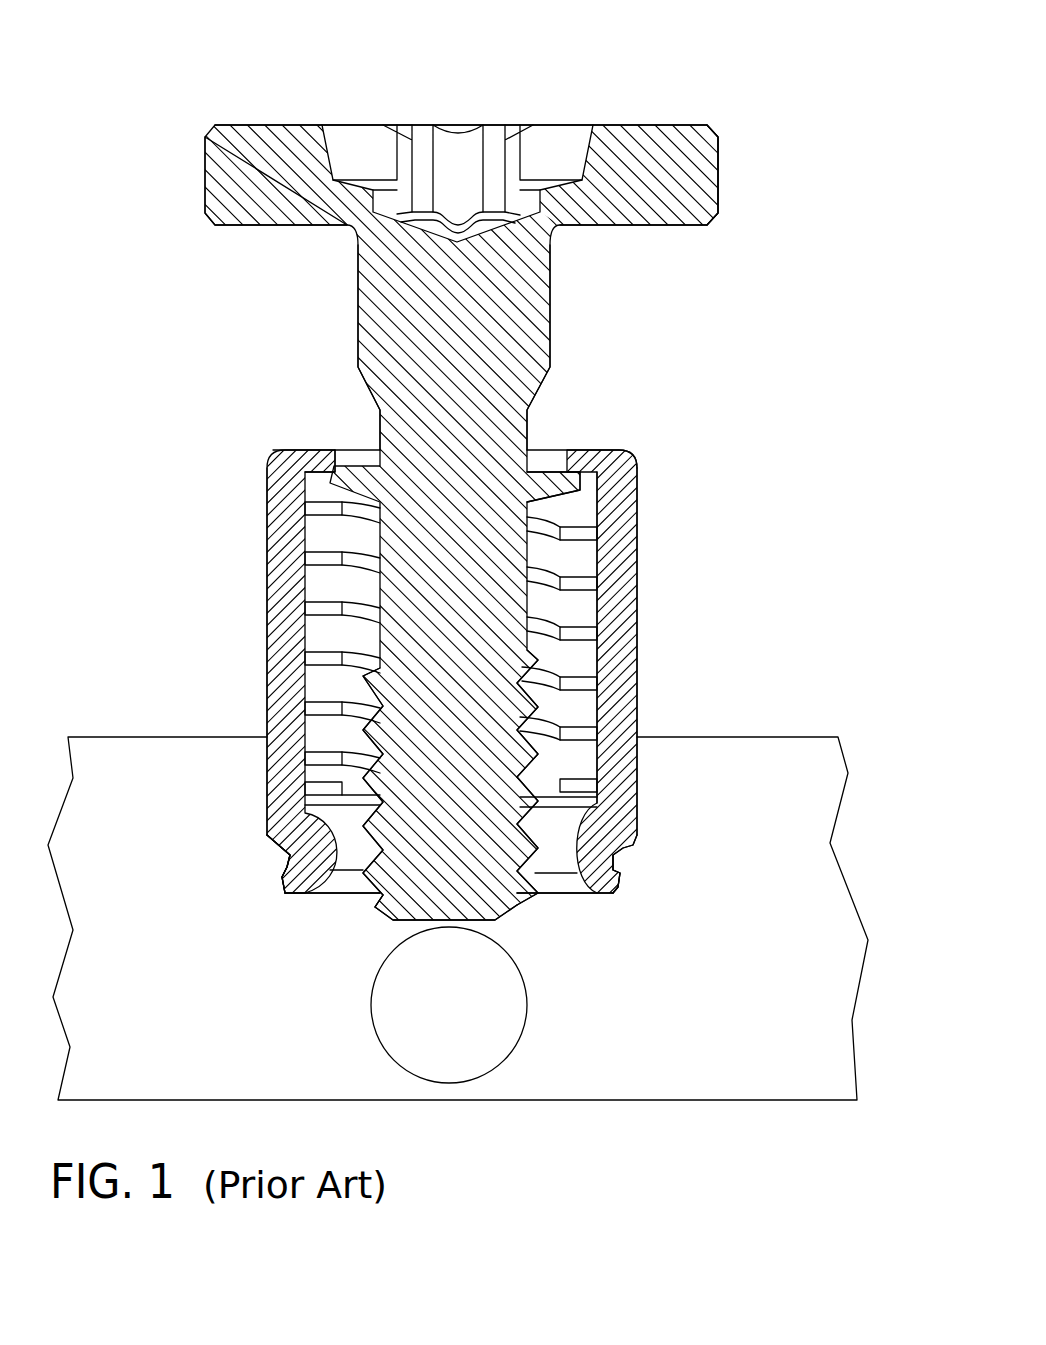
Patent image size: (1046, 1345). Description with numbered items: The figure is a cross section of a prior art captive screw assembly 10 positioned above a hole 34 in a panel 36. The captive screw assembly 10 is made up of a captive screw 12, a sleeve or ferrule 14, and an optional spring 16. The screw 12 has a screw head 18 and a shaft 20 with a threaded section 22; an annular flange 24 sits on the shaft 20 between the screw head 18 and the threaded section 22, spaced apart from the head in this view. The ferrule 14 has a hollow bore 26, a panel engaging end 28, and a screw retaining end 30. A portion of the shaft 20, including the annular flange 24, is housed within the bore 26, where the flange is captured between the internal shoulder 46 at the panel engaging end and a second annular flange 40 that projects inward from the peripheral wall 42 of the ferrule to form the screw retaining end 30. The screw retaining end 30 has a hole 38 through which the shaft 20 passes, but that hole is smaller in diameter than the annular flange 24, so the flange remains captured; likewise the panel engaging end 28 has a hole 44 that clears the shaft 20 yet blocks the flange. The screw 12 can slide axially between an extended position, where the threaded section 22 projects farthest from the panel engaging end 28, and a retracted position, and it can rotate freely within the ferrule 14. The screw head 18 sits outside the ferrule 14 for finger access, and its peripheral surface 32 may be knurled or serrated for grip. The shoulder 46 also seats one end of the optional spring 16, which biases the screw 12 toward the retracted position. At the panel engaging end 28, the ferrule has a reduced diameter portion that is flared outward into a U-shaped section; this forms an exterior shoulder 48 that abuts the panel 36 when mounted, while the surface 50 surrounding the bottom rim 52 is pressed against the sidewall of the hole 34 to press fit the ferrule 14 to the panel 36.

The captive screw assembly 10 is at (475, 483).
The captive screw 12 is at (490, 506).
The ferrule 14 is at (638, 573).
The spring 16 is at (340, 552).
The screw head 18 is at (643, 143).
The shaft 20 is at (387, 347).
The threaded section 22 is at (403, 683).
The annular flange 24 is at (542, 478).
The hollow bore 26 is at (318, 726).
The panel engaging end 28 is at (263, 872).
The screw retaining end 30 is at (442, 642).
The peripheral surface 32 is at (720, 180).
The hole 34 is at (503, 1040).
The panel 36 is at (458, 916).
The hole 38 is at (353, 460).
The second annular flange 40 is at (598, 452).
The peripheral wall 42 is at (638, 655).
The hole 44 is at (552, 853).
The shoulder 46 is at (265, 835).
The exterior shoulder 48 is at (633, 845).
The surface 50 is at (618, 888).
The bottom rim 52 is at (285, 893).